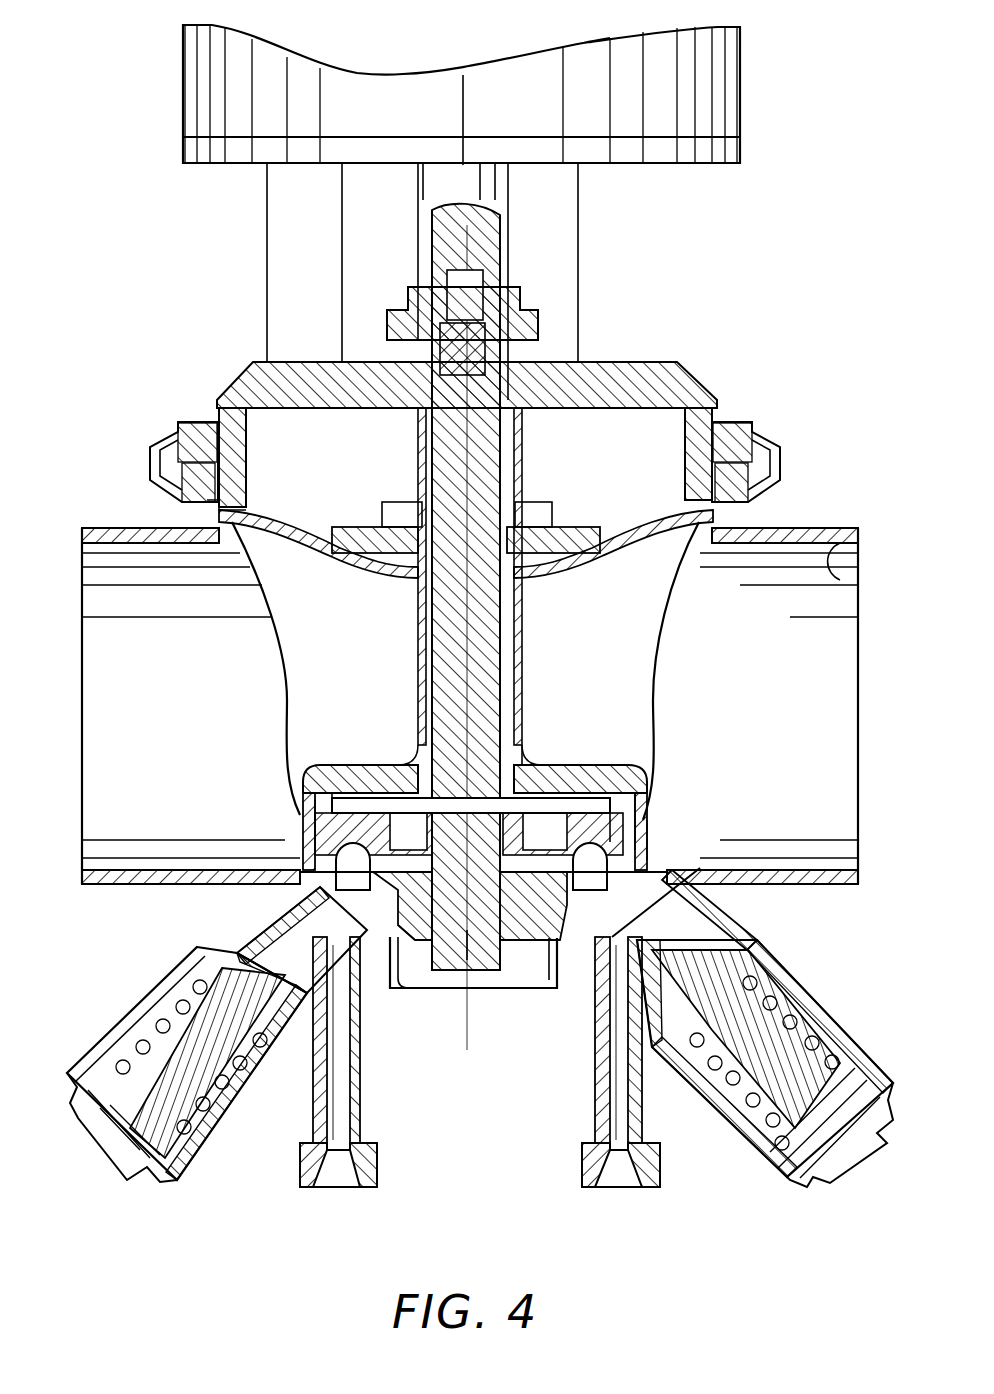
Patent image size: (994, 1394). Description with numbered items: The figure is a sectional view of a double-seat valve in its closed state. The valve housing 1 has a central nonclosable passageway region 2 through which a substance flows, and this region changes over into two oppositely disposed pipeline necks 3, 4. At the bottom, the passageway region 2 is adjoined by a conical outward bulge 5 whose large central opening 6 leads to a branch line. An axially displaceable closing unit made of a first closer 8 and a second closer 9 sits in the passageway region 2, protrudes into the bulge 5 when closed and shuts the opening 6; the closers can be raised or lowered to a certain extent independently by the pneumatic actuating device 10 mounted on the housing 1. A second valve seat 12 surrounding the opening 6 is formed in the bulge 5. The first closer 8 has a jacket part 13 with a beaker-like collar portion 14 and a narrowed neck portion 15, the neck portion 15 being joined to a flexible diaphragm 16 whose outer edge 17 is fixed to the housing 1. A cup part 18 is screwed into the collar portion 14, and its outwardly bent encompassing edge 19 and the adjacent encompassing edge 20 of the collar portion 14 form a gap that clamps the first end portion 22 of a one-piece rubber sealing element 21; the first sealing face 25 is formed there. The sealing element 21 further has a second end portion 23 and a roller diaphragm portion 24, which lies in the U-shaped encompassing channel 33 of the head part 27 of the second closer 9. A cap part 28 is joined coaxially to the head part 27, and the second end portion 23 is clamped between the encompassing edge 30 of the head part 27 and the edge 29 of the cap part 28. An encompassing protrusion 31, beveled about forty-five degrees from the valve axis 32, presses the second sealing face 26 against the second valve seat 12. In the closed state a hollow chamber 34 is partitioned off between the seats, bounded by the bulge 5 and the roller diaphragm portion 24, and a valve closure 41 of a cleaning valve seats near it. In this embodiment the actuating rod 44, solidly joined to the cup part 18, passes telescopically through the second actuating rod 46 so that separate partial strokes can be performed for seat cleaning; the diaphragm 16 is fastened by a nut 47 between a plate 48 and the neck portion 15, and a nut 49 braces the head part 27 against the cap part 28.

The valve housing 1 is at (150, 498).
The central nonclosable passageway region 2 is at (300, 645).
The pipeline neck 3 is at (98, 884).
The pipeline neck 4 is at (860, 563).
The conical outward bulge 5 is at (546, 974).
The central opening 6 is at (540, 990).
The first closer 8 is at (650, 788).
The second closer 9 is at (596, 772).
The pneumatic actuating device 10 is at (538, 117).
The second valve seat 12 is at (372, 950).
The jacket part 13 is at (526, 750).
The collar portion 14 is at (652, 786).
The neck portion 15 is at (522, 648).
The flexible diaphragm 16 is at (640, 528).
The outer edge 17 is at (718, 520).
The cup part 18 is at (302, 790).
The encompassing edge 19 is at (322, 858).
The encompassing edge 20 is at (326, 810).
The sealing element 21 is at (692, 894).
The first end portion 22 is at (665, 836).
The second end portion 23 is at (414, 966).
The roller diaphragm portion 24 is at (386, 856).
The first sealing face 25 is at (340, 792).
The second sealing face 26 is at (500, 976).
The head part 27 is at (545, 856).
The cap part 28 is at (492, 896).
The edge of the cap part 29 is at (418, 990).
The encompassing edge 30 is at (446, 848).
The encompassing protrusion 31 is at (662, 962).
The valve axis 32 is at (463, 98).
The encompassing channel 33 is at (655, 836).
The hollow chamber 34 is at (585, 836).
The valve closure 41 is at (292, 900).
The actuating rod 44 is at (500, 395).
The second actuating rod 46 is at (540, 402).
The nut 47 is at (524, 505).
The plate 48 is at (362, 527).
The nut 49 is at (548, 762).